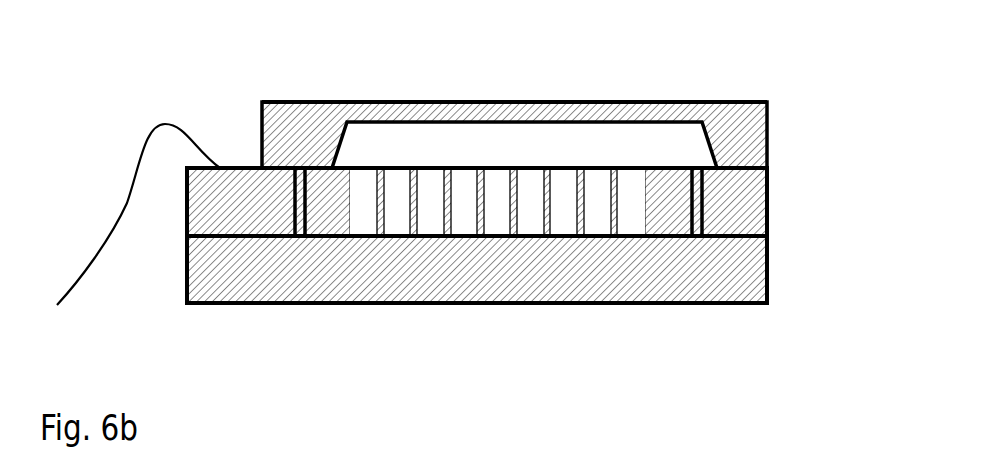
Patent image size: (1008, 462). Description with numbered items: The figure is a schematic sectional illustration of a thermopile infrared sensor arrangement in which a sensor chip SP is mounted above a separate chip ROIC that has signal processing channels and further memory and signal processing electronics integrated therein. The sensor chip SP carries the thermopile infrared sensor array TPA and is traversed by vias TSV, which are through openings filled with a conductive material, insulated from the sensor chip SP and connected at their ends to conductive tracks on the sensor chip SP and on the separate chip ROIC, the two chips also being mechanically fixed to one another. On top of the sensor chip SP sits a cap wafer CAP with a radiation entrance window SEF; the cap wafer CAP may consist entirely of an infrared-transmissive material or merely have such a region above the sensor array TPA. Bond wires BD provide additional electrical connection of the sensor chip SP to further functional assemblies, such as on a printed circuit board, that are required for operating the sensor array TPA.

The cap wafer CAP is at (312, 104).
The radiation entrance window SEF is at (518, 100).
The sensor chip SP is at (745, 203).
The vias TSV is at (701, 198).
The thermopile infrared sensor array TPA is at (519, 175).
The separate chip ROIC is at (477, 269).
The bond wires BD is at (95, 265).